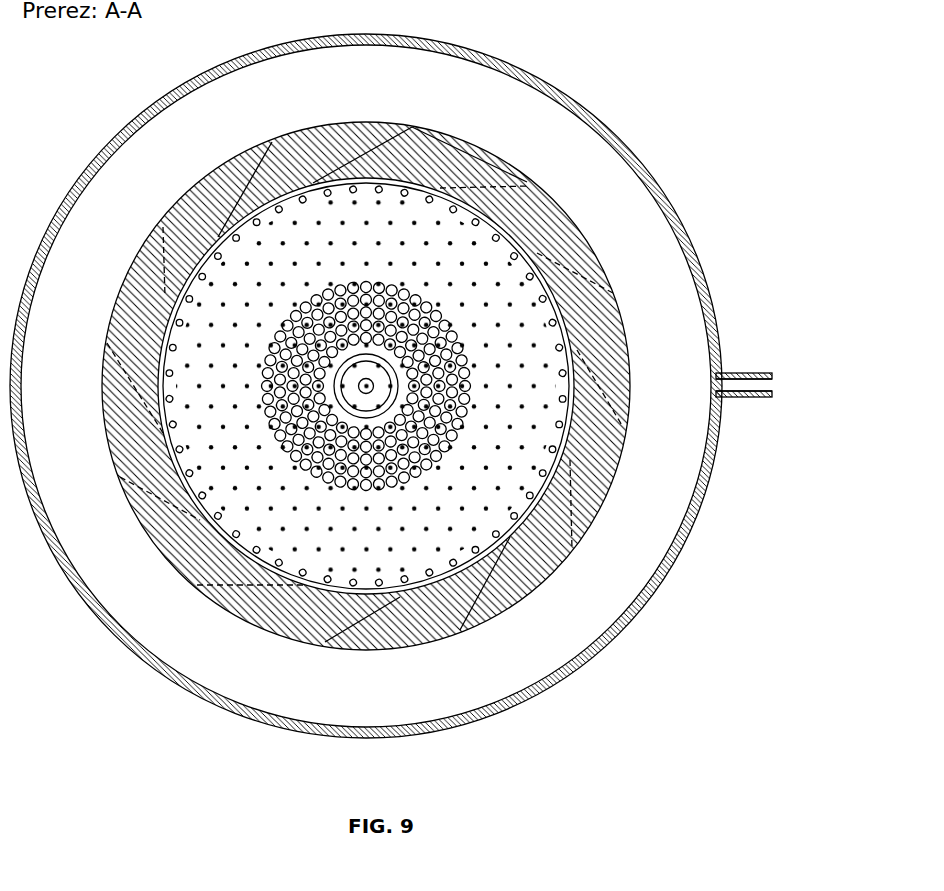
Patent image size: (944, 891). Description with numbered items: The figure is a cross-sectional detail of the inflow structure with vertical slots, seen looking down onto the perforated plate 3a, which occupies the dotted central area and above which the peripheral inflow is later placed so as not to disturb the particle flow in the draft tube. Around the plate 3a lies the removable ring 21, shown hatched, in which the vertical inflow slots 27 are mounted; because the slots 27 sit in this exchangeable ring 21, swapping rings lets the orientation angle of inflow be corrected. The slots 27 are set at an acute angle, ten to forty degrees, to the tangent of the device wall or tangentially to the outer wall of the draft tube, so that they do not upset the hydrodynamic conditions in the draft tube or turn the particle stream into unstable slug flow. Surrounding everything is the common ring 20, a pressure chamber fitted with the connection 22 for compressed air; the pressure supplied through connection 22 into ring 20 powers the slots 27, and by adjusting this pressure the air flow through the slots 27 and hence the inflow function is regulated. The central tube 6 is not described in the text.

The central tube 6 is at (378, 370).
The perforated plate 3a is at (497, 317).
The common ring 20 is at (705, 483).
The removable ring 21 is at (523, 577).
The connection for compressed air 22 is at (748, 400).
The vertical slots 27 is at (570, 518).